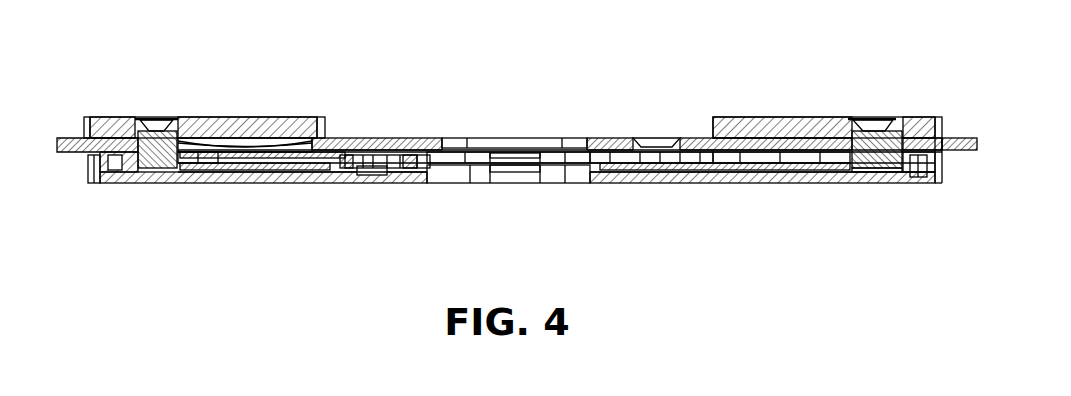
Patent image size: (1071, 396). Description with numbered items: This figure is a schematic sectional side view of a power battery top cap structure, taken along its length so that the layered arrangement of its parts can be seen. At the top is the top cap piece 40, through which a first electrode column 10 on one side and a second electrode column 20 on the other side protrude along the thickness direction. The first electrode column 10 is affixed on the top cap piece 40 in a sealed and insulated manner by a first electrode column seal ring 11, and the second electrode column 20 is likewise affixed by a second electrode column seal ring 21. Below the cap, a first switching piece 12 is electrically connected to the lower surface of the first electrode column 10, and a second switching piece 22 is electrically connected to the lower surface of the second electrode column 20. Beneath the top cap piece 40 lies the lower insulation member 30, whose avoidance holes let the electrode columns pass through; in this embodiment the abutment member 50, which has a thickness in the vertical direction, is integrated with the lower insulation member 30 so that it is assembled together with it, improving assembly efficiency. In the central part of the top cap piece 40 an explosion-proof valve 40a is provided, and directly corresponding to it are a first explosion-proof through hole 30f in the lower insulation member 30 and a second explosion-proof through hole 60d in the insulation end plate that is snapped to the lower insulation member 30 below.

The first electrode column 10 is at (152, 132).
The first electrode column seal ring 11 is at (112, 163).
The first switching piece 12 is at (217, 173).
The second electrode column 20 is at (884, 122).
The second electrode column seal ring 21 is at (912, 175).
The second switching piece 22 is at (718, 172).
The lower insulation member 30 is at (298, 163).
The first explosion-proof through hole 30f is at (488, 160).
The top cap piece 40 is at (375, 140).
The explosion-proof valve 40a is at (503, 145).
The abutment member 50 is at (403, 153).
The second explosion-proof through hole 60d is at (542, 177).